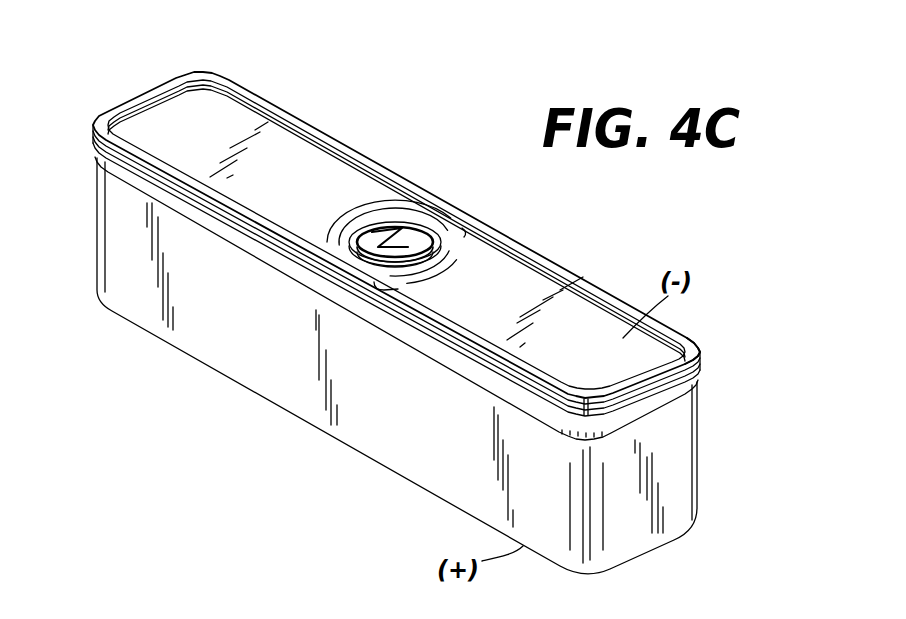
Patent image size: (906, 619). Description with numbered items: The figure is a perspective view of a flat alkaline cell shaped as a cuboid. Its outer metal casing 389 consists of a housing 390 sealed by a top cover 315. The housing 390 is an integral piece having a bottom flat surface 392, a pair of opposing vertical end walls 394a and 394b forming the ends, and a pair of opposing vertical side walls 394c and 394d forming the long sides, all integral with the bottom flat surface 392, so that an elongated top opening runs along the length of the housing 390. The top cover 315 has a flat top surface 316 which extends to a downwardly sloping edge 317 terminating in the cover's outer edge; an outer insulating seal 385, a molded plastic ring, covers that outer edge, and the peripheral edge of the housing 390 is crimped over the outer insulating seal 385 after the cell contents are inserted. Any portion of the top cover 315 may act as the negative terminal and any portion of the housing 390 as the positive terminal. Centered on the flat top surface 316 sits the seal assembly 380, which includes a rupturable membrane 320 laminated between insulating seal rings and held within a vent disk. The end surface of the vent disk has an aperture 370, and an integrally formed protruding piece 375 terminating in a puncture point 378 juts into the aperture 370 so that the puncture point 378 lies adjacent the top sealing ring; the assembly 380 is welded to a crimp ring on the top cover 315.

The top cover 315 is at (503, 268).
The flat top surface 316 is at (572, 284).
The downwardly sloping edge 317 is at (696, 350).
The rupturable membrane 320 is at (417, 232).
The aperture 370 is at (399, 231).
The protruding piece 375 is at (388, 244).
The puncture point 378 is at (396, 247).
The seal assembly 380 is at (458, 227).
The outer insulating seal 385 is at (701, 377).
The outer metal casing 389 is at (478, 492).
The housing 390 is at (631, 529).
The bottom flat surface 392 is at (152, 331).
The vertical end wall 394a is at (677, 470).
The vertical end wall 394b is at (144, 98).
The vertical side wall 394c is at (400, 437).
The vertical side wall 394d is at (321, 121).